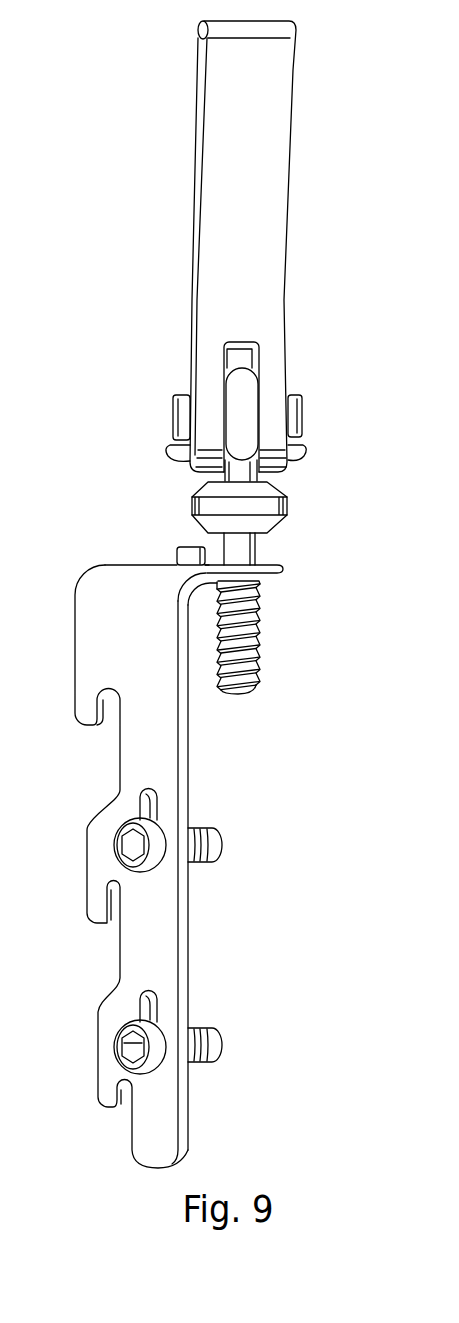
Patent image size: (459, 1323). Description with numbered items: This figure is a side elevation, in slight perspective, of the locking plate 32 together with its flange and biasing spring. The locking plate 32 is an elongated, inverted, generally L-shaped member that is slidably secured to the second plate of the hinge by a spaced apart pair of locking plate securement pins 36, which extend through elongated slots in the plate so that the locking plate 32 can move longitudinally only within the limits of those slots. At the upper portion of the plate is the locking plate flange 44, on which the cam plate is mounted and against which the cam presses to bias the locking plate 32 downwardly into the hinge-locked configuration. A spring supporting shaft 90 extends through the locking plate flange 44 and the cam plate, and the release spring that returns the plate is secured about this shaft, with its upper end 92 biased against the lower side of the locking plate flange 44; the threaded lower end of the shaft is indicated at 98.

The locking plate 32 is at (182, 740).
The locking plate securement pins 36 is at (207, 863).
The locking plate flange 44 is at (308, 571).
The spring supporting shaft 90 is at (263, 545).
The upper end 92 is at (262, 593).
The threaded end 98 is at (256, 690).